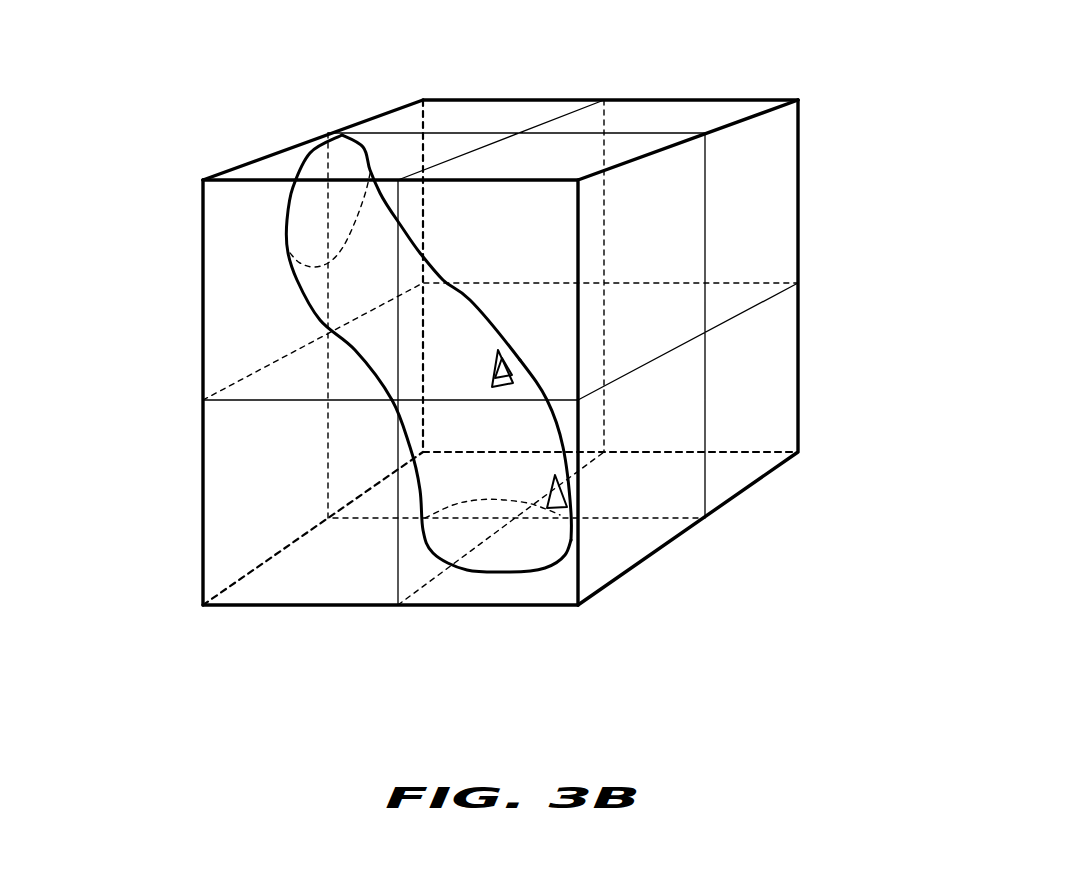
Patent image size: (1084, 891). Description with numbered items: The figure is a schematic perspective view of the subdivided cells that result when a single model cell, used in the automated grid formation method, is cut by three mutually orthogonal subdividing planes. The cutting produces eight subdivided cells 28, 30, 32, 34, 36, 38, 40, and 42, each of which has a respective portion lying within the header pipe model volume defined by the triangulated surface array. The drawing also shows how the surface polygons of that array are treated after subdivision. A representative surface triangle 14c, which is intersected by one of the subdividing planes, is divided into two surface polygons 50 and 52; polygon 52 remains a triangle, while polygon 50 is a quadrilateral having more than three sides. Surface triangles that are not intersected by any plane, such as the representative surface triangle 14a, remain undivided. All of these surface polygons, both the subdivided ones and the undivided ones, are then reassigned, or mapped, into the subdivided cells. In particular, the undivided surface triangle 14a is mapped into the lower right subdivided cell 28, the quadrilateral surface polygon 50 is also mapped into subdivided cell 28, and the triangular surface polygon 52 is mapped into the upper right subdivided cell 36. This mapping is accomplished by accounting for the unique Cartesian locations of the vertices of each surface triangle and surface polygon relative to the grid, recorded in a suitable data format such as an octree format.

The subdivided cell 28 is at (575, 607).
The subdivided cell 30 is at (798, 452).
The subdivided cell 32 is at (203, 605).
The subdivided cell 34 is at (450, 462).
The subdivided cell 36 is at (578, 181).
The subdivided cell 38 is at (800, 100).
The subdivided cell 40 is at (203, 180).
The subdivided cell 42 is at (423, 99).
The surface triangle 14a is at (563, 497).
The surface triangle 14c is at (497, 367).
The surface polygon 50 is at (510, 380).
The surface polygon 52 is at (510, 370).